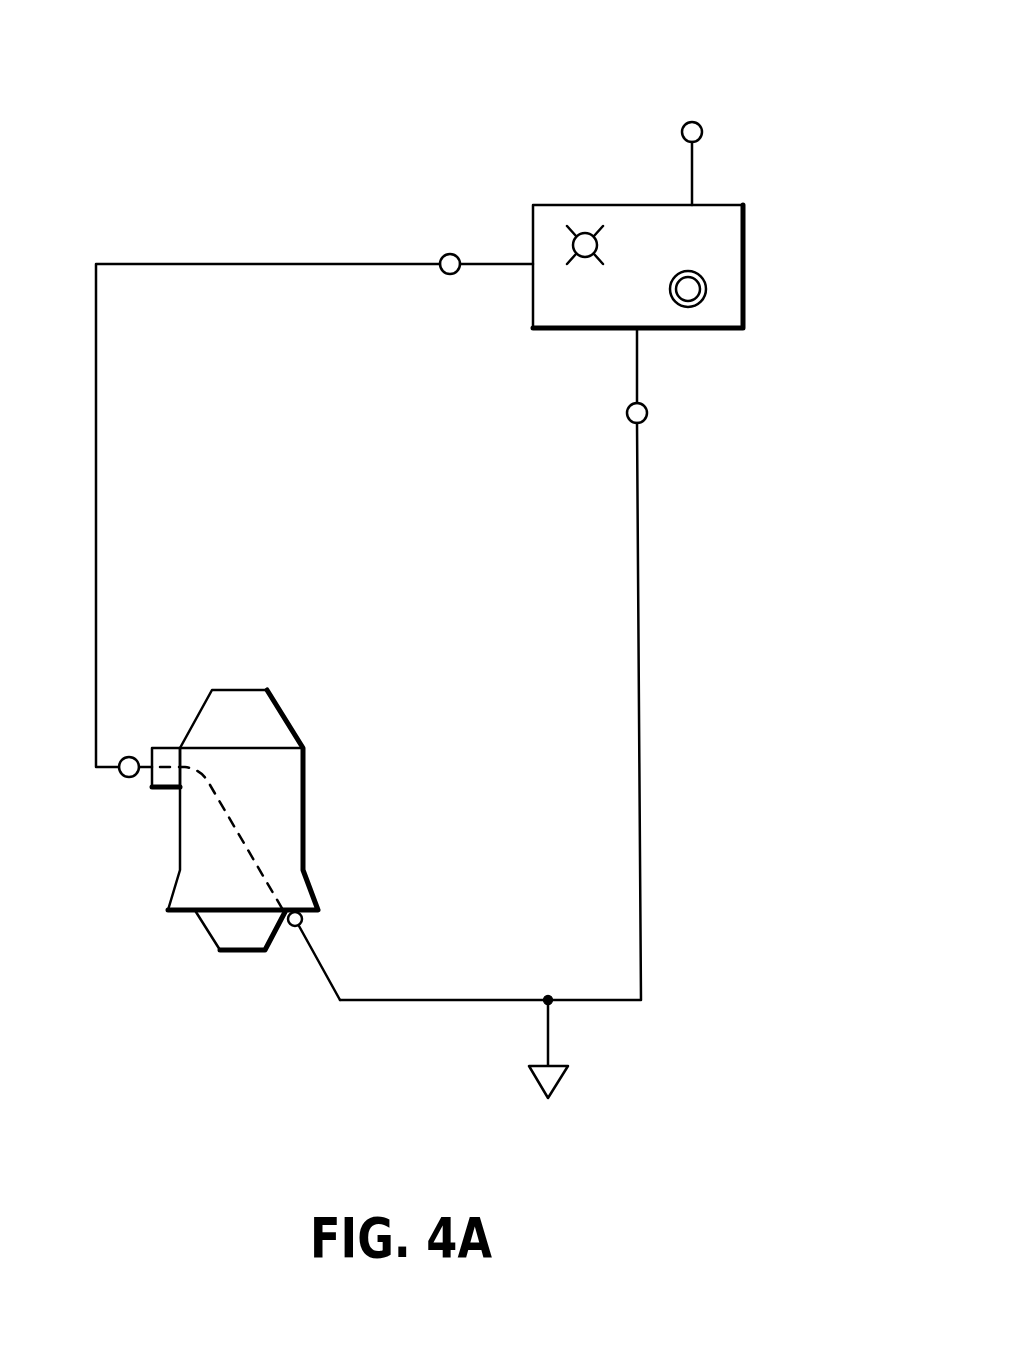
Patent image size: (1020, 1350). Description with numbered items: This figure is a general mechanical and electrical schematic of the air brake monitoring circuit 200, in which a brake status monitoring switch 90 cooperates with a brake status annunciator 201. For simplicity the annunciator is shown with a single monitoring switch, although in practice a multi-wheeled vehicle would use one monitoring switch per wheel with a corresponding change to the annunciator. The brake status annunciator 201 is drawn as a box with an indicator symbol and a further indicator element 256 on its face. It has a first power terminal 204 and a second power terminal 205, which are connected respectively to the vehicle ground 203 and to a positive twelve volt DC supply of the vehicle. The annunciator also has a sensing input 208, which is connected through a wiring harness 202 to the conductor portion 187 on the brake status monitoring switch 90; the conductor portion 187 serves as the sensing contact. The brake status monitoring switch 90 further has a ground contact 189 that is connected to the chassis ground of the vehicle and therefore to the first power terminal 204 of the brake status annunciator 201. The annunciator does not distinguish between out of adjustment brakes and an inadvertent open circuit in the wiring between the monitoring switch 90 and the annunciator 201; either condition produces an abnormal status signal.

The air brake monitoring circuit 200 is at (772, 50).
The brake status annunciator 201 is at (743, 230).
The wiring harness 202 is at (140, 516).
The vehicle ground 203 is at (640, 718).
The first power terminal 204 is at (648, 412).
The second power terminal 205 is at (684, 124).
The sensing input 208 is at (446, 254).
The indicator 256 is at (706, 290).
The brake status monitoring switch 90 is at (345, 786).
The conductor portion 187 is at (129, 778).
The ground contact 189 is at (303, 921).